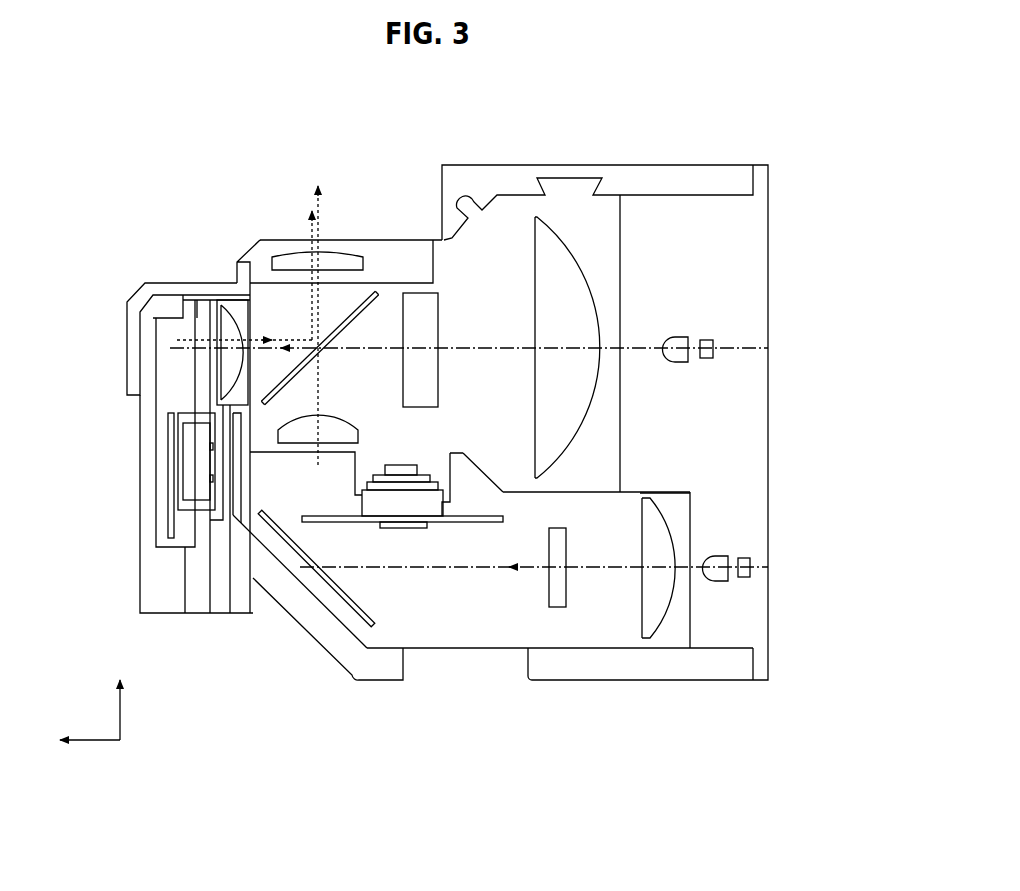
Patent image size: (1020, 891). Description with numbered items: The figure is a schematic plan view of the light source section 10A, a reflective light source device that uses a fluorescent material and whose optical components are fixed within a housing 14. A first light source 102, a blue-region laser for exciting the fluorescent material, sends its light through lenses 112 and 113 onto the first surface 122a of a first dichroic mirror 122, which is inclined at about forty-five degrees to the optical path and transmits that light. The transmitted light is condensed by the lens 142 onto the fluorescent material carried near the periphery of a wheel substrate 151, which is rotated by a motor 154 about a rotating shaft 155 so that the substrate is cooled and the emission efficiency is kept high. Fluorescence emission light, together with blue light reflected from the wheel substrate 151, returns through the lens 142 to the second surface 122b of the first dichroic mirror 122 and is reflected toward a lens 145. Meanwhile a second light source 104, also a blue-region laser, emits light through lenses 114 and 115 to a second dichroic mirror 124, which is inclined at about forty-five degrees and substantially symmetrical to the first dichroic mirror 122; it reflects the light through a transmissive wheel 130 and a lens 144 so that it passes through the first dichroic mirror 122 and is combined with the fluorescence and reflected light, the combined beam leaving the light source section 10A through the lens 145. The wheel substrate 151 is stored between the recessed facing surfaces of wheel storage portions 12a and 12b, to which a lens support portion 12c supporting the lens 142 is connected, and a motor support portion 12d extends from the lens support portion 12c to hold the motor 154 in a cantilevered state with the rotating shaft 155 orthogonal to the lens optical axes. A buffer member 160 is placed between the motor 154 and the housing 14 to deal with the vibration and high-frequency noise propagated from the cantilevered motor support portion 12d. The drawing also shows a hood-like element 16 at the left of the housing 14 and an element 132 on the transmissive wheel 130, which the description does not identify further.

The light source section 10A is at (736, 128).
The housing 14 is at (497, 650).
The hood 16 is at (152, 282).
The wheel storage portion 12a is at (202, 607).
The wheel storage portion 12b is at (160, 607).
The lens support portion 12c is at (212, 293).
The motor support portion 12d is at (173, 410).
The first light source 102 is at (713, 345).
The second light source 104 is at (752, 565).
The lens 112 is at (572, 290).
The lens 113 is at (442, 303).
The lens 114 is at (672, 538).
The lens 115 is at (558, 609).
The first dichroic mirror 122 is at (376, 289).
The first surface 122a is at (386, 302).
The second surface 122b is at (338, 295).
The second dichroic mirror 124 is at (360, 628).
The transmissive wheel 130 is at (487, 518).
The light receiving element 132 is at (433, 510).
The lens 142 is at (232, 297).
The lens 144 is at (295, 447).
The lens 145 is at (285, 258).
The wheel substrate 151 is at (167, 528).
The motor 154 is at (193, 488).
The rotating shaft 155 is at (213, 458).
The buffer member 160 is at (240, 480).